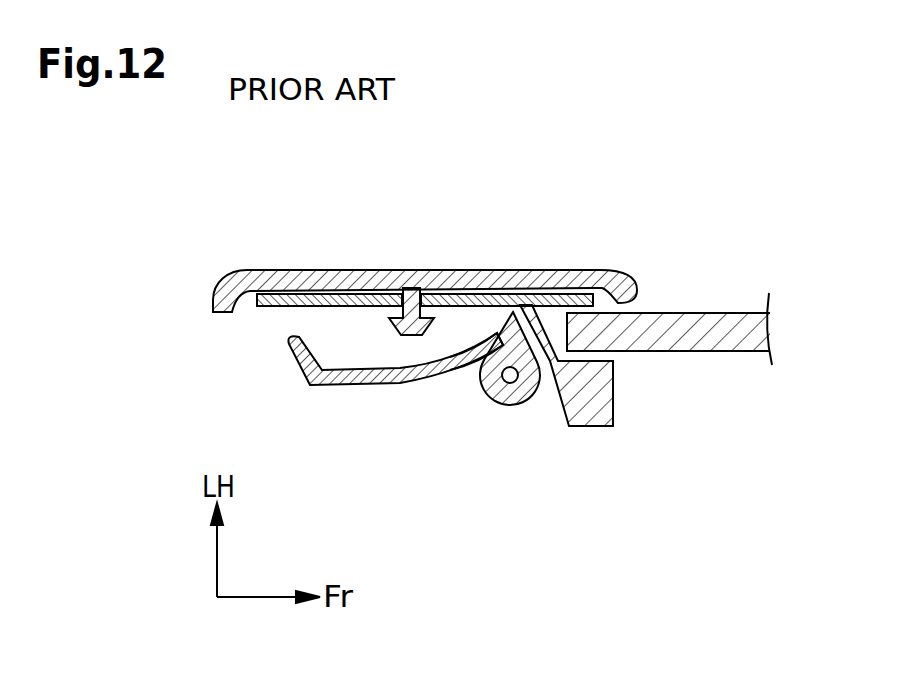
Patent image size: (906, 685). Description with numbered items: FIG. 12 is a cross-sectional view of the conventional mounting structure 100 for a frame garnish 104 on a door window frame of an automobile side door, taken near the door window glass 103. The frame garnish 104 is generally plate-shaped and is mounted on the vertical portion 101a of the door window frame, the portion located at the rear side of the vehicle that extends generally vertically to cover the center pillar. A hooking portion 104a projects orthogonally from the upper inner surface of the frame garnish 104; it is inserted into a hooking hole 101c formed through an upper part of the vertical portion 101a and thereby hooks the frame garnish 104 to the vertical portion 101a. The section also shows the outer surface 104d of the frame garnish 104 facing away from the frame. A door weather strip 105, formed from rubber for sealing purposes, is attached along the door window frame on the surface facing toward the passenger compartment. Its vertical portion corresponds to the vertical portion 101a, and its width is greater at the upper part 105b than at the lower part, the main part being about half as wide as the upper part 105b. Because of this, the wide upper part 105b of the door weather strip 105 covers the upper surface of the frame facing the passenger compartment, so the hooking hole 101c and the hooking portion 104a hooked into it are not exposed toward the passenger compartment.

The mounting structure 100 is at (222, 190).
The frame garnish 104 is at (540, 260).
The cover top surface 104d is at (327, 270).
The vertical portion 101a is at (267, 307).
The hooking hole 101c is at (408, 270).
The hooking portion 104a is at (403, 337).
The upper part 105b is at (458, 366).
The door weather strip 105 is at (535, 412).
The door window glass 103 is at (704, 348).